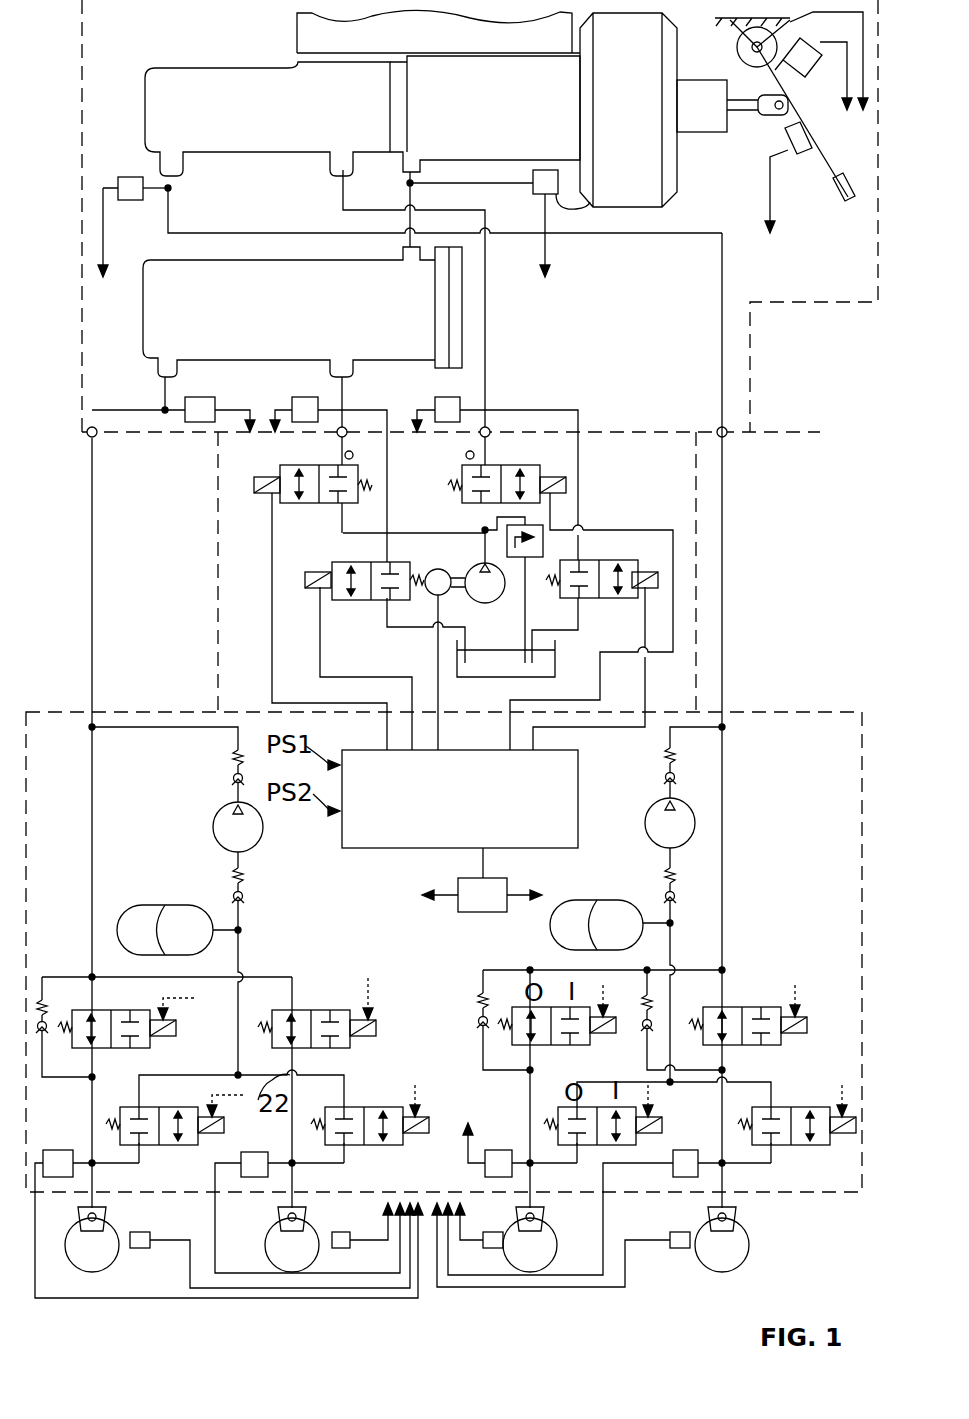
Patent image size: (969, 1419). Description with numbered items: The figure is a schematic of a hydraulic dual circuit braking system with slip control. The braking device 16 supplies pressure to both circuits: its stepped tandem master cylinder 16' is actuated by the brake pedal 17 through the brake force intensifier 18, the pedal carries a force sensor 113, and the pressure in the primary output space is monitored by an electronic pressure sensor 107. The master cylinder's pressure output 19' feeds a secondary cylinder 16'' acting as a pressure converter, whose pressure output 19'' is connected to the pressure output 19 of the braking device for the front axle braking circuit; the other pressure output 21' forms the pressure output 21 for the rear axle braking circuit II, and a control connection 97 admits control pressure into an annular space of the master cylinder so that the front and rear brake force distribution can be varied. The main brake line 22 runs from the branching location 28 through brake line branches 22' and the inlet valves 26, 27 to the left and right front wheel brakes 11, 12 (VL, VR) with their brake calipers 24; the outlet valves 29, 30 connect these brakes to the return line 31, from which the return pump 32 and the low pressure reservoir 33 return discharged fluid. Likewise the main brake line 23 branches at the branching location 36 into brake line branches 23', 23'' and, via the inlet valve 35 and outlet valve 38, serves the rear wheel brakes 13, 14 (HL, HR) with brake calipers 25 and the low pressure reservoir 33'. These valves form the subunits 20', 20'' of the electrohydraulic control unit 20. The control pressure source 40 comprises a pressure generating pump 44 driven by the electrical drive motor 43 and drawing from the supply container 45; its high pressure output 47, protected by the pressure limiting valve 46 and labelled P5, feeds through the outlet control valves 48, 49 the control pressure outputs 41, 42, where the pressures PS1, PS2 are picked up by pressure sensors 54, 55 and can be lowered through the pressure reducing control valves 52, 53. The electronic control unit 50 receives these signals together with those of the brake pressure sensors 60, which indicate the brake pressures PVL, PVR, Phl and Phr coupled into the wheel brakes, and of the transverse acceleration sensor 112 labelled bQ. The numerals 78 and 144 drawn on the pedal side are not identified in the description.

The braking device 16 is at (480, 216).
The stepped tandem master cylinder 16' is at (353, 94).
The secondary cylinder 16'' is at (347, 312).
The housing 78 is at (297, 32).
The pedal travel sensor 144 is at (735, 50).
The pressure output 21' is at (181, 197).
The control connection 97 is at (338, 177).
The pressure output 19' is at (384, 209).
The electronic pressure sensor 107 is at (590, 205).
The brake force intensifier 18 is at (692, 172).
The force sensor 113 is at (786, 140).
The brake pedal 17 is at (838, 192).
The electronic control unit 50 is at (578, 795).
The pressure sensor 54 is at (303, 398).
The control pressure output 41 is at (343, 425).
The pressure sensor 55 is at (440, 397).
The control pressure output 42 is at (487, 425).
The pressure output 19 is at (114, 457).
The pressure output 19'' is at (187, 432).
The outlet control valve 48 is at (352, 486).
The outlet control valve 49 is at (560, 594).
The pressure output 21 is at (755, 448).
The control pressure source 40 is at (672, 487).
The high pressure output 47 is at (470, 538).
The pressure limiting valve 46 is at (545, 546).
The pressure reducing control valve 52 is at (318, 572).
The electrical drive motor 43 is at (387, 562).
The pressure reducing control valve 53 is at (622, 560).
The pressure generating pump 44 is at (485, 603).
The supply container 45 is at (557, 660).
The electrohydraulic control unit 20 is at (444, 913).
The subunit 20' is at (59, 677).
The subunit 20'' is at (853, 1216).
The main brake line 22 is at (123, 823).
The main brake line 23 is at (747, 720).
The return pump 32 is at (213, 827).
The low pressure reservoir 33 is at (179, 910).
The transverse acceleration sensor 112 is at (500, 881).
The branching location 28 is at (92, 973).
The brake line branch 22' is at (190, 972).
The brake line branch 23' is at (583, 956).
The low pressure reservoir 33' is at (589, 929).
The branching location 36 is at (724, 975).
The brake line branch 23'' is at (766, 961).
The inlet valve 26 is at (145, 1047).
The inlet valve 27 is at (350, 1047).
The outlet valve 29 is at (185, 1143).
The outlet valve 30 is at (388, 1143).
The inlet valve 35 is at (780, 1046).
The outlet valve 38 is at (790, 1143).
The return line 31 is at (208, 1073).
The brake pressure sensor 60 is at (58, 1150).
The brake caliper 24 is at (110, 1215).
The brake caliper 25 is at (545, 1215).
The left front wheel brake 11 is at (80, 1255).
The right front wheel brake 12 is at (275, 1248).
The left rear wheel brake 13 is at (556, 1245).
The right rear wheel brake 14 is at (748, 1245).
The control pressure PS1 is at (303, 453).
The control pressure PS2 is at (545, 468).
The pump output pressure P5 is at (460, 522).
The transverse acceleration bQ is at (505, 880).
The left front wheel brake designation VL is at (146, 1255).
The right front wheel brake designation VR is at (359, 1252).
The left rear wheel brake designation HL is at (484, 1252).
The right rear wheel brake designation HR is at (678, 1252).
The rear axle braking circuit II is at (615, 1225).
The brake pressure PVL is at (109, 1316).
The brake pressure PVR is at (311, 1316).
The brake pressure Phl is at (534, 1316).
The brake pressure Phr is at (733, 1308).